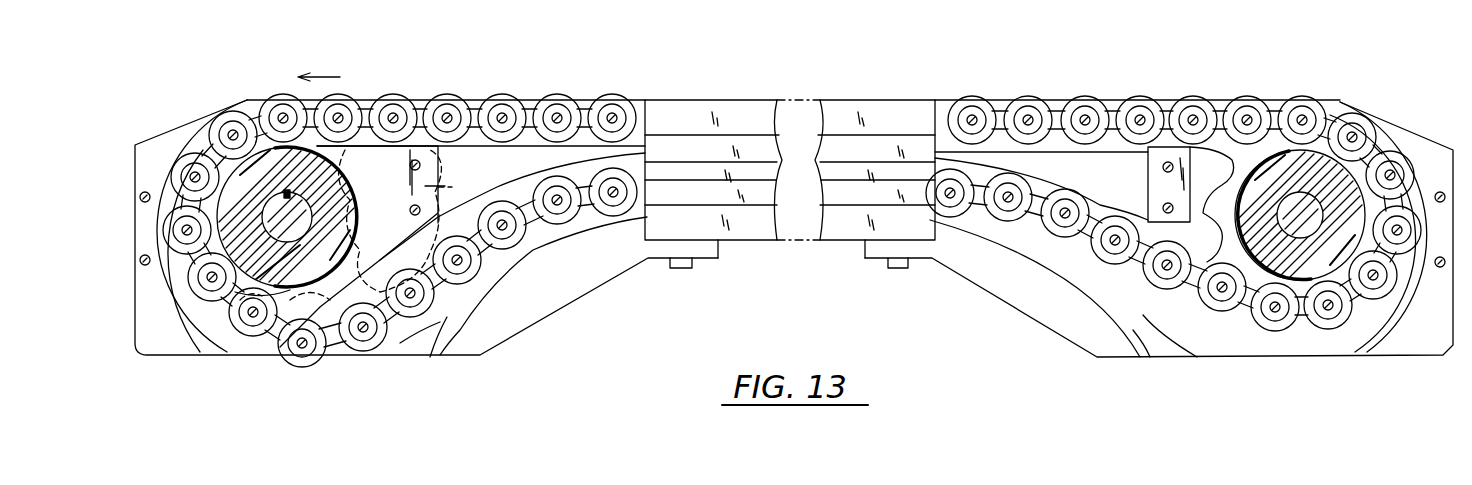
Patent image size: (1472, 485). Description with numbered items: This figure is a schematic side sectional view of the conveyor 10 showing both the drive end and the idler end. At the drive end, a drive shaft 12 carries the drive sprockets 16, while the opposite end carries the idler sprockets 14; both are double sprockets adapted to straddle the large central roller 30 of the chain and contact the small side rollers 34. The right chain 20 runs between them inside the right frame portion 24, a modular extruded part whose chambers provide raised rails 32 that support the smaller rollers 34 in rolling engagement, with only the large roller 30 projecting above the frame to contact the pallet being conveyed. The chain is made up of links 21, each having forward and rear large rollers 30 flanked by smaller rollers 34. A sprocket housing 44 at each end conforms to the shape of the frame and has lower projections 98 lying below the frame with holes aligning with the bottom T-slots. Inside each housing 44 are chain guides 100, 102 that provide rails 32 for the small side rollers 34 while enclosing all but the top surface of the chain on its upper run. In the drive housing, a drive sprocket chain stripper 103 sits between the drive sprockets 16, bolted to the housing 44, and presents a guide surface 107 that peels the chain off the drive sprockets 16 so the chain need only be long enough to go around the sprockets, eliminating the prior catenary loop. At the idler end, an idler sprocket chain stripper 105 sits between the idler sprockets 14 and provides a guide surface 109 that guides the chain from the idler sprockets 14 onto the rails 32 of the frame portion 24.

The conveyor 10 is at (700, 60).
The drive shaft 12 is at (270, 233).
The idler sprockets 14 is at (1238, 148).
The drive sprockets 16 is at (450, 186).
The right chain 20 is at (566, 89).
The links 21 is at (535, 88).
The right frame portion 24 is at (837, 110).
The large roller 30 is at (444, 95).
The raised rails 32 is at (600, 102).
The smaller rollers 34 is at (497, 100).
The sprocket housing 44 is at (178, 127).
The lower projections 98 is at (708, 256).
The chain guide 100 is at (405, 337).
The chain guide 102 is at (478, 142).
The drive sprocket chain stripper 103 is at (340, 223).
The idler sprocket chain stripper 105 is at (1148, 176).
The guide surface 107 is at (270, 292).
The guide surface 109 is at (1170, 147).